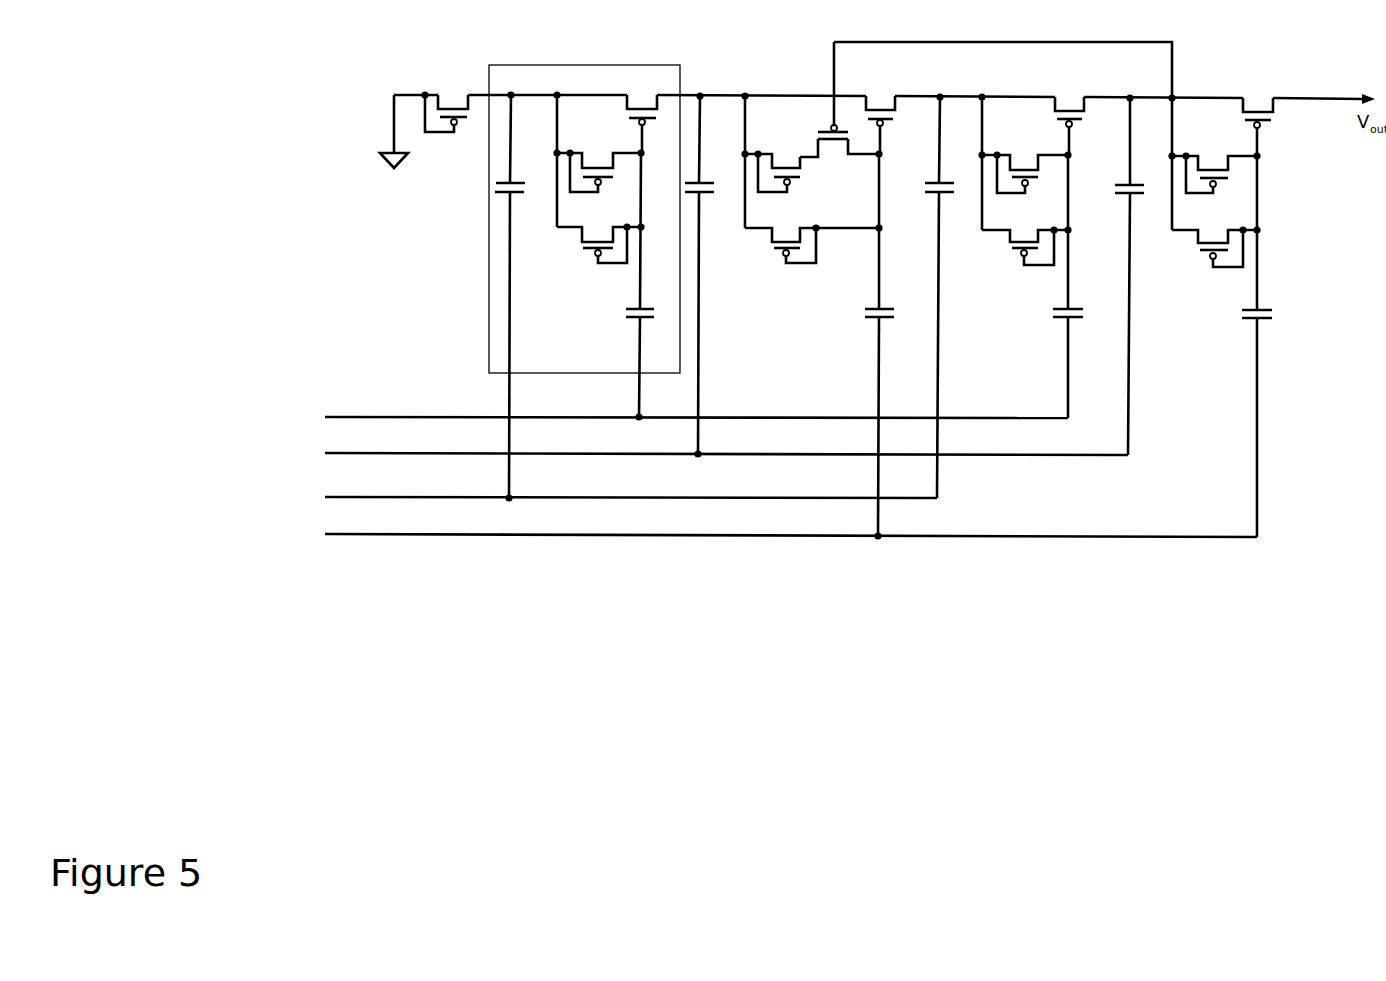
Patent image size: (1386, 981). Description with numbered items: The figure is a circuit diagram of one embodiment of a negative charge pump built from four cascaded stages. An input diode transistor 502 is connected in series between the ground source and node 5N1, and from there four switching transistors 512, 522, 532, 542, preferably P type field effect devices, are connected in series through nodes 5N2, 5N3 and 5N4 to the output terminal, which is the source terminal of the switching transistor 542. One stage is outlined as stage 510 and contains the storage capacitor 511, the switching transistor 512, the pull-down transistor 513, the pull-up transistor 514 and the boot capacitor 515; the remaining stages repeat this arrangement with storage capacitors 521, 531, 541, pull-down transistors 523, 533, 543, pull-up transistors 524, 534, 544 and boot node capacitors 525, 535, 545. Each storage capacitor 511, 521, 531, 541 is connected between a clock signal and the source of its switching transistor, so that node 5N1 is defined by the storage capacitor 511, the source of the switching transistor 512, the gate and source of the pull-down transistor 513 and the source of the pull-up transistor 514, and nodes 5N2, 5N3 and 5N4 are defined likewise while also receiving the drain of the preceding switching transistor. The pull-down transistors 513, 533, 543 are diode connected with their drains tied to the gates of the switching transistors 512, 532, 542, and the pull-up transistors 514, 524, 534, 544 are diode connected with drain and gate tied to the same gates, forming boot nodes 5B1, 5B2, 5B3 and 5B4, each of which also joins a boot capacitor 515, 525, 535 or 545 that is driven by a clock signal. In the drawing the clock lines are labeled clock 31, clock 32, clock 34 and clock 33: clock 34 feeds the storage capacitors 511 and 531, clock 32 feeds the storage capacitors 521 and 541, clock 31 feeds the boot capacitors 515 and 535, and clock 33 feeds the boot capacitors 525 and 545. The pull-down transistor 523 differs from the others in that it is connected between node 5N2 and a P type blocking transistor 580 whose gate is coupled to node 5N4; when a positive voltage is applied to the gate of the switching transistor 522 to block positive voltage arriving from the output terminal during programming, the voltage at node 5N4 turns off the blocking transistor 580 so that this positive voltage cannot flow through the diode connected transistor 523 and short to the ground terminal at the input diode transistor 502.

The input diode transistor 502 is at (454, 114).
The stage 510 is at (567, 219).
The storage capacitor 511 is at (520, 296).
The switching transistor 512 is at (653, 124).
The pull-down transistor 513 is at (598, 174).
The pull-up transistor 514 is at (596, 243).
The boot node capacitor 515 is at (651, 365).
The storage capacitor 521 is at (709, 274).
The switching transistor 522 is at (891, 125).
The pull-down transistor 523 is at (783, 174).
The pull-up transistor 524 is at (810, 243).
The boot node capacitor 525 is at (889, 424).
The storage capacitor 531 is at (948, 295).
The switching transistor 532 is at (1080, 126).
The pull-down transistor 533 is at (1025, 176).
The pull-up transistor 534 is at (1023, 245).
The boot node capacitor 535 is at (1078, 363).
The storage capacitor 541 is at (1138, 274).
The switching transistor 542 is at (1268, 127).
The pull-down transistor 543 is at (1214, 176).
The pull-up transistor 544 is at (1213, 246).
The boot node capacitor 545 is at (1267, 423).
The blocking transistor 580 is at (977, 99).
The node 5N1 is at (552, 151).
The node 5N2 is at (735, 151).
The node 5N3 is at (967, 153).
The node 5N4 is at (1151, 153).
The boot node 5B1 is at (656, 229).
The boot node 5B2 is at (896, 229).
The boot node 5B3 is at (1085, 230).
The boot node 5B4 is at (1273, 231).
The clock signal 31 is at (646, 405).
The clock signal 32 is at (675, 444).
The clock signal 33 is at (738, 526).
The clock signal 34 is at (579, 485).